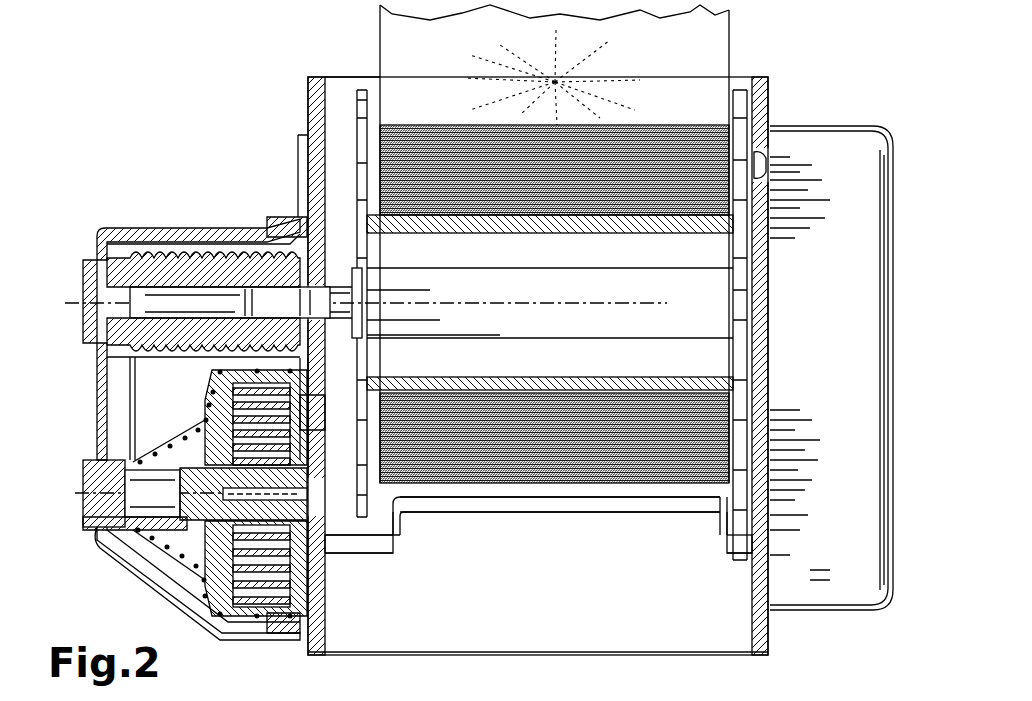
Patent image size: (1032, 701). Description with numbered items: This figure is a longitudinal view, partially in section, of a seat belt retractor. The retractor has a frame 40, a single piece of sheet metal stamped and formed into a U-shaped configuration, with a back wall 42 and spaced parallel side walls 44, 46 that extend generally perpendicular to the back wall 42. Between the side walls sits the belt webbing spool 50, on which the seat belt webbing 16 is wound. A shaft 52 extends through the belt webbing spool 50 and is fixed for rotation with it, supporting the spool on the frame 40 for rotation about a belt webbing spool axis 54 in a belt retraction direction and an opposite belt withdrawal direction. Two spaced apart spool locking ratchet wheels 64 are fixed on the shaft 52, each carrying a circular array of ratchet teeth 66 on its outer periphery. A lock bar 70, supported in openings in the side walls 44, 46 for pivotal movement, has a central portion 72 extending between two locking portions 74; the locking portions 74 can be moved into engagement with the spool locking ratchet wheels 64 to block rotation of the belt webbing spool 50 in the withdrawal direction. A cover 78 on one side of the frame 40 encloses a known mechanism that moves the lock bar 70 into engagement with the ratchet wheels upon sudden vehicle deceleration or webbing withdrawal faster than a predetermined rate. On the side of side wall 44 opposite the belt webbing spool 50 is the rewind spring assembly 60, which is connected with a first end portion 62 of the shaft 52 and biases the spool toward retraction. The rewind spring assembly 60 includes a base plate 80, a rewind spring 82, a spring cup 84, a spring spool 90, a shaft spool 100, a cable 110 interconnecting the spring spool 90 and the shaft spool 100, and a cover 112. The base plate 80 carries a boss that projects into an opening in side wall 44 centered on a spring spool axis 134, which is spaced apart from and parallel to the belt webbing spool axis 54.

The seat belt webbing 16 is at (730, 38).
The frame 40 is at (775, 627).
The back wall 42 is at (413, 652).
The side wall 44 is at (325, 632).
The side wall 46 is at (752, 610).
The belt webbing spool 50 is at (507, 232).
The shaft 52 is at (523, 342).
The belt webbing spool axis 54 is at (65, 303).
The rewind spring assembly 60 is at (137, 178).
The first end portion 62 is at (335, 300).
The spool locking ratchet wheels 64 is at (383, 485).
The ratchet teeth 66 is at (360, 535).
The lock bar 70 is at (522, 517).
The central portion 72 is at (558, 512).
The locking portions 74 is at (382, 557).
The cover 78 is at (846, 125).
The base plate 80 is at (287, 215).
The rewind spring 82 is at (253, 430).
The spring cup 84 is at (310, 413).
The spring spool 90 is at (193, 563).
The shaft spool 100 is at (180, 240).
The cable 110 is at (130, 395).
The cover 112 is at (232, 233).
The spring spool axis 134 is at (75, 500).